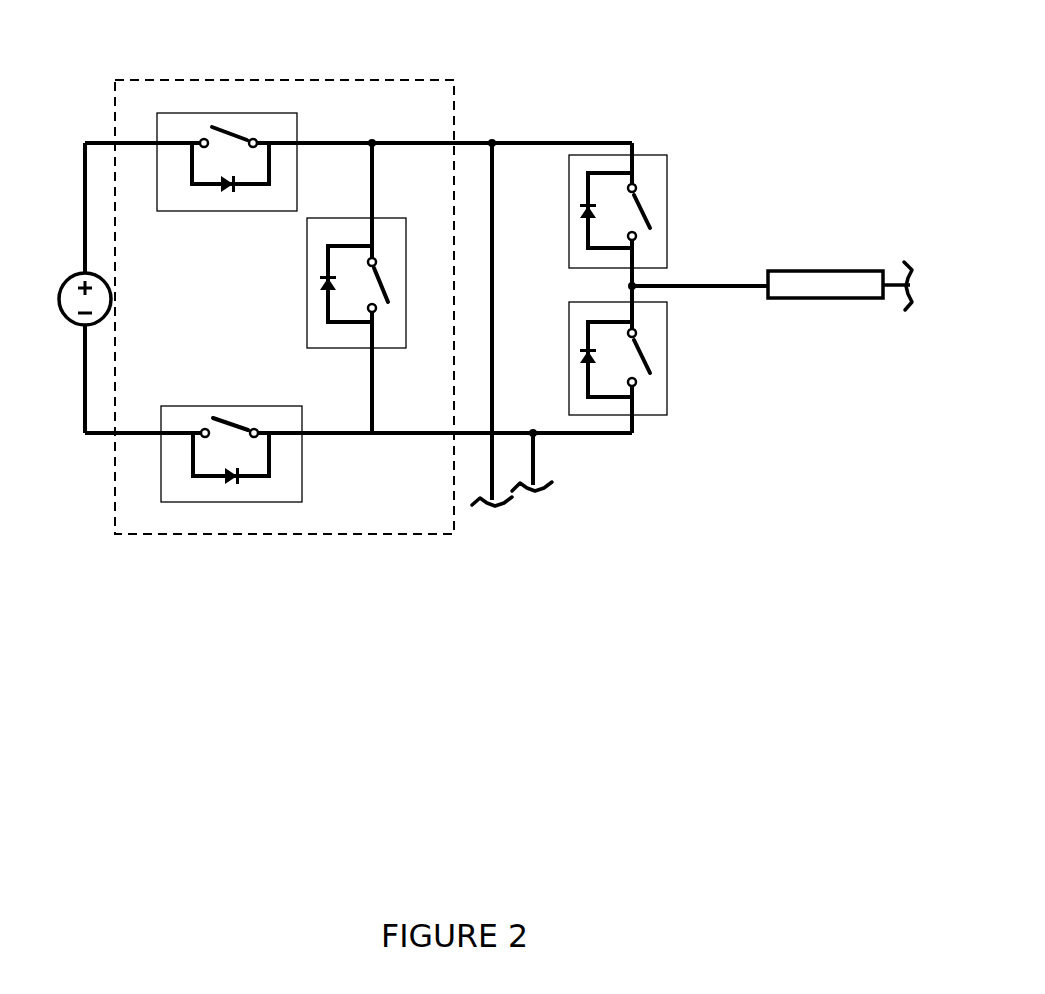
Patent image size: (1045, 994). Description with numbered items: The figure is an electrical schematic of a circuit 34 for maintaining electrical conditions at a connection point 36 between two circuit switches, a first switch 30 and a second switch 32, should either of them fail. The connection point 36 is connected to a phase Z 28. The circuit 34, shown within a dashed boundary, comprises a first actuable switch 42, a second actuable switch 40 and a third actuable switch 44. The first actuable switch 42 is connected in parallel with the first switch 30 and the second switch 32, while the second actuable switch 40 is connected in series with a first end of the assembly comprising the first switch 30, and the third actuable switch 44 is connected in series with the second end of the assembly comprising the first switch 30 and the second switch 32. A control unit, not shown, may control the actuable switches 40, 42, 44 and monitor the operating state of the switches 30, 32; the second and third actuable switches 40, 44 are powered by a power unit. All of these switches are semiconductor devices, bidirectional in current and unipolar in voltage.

The phase Z 28 is at (822, 270).
The first switch 30 is at (667, 210).
The second switch 32 is at (667, 358).
The circuit for maintaining electrical conditions 34 is at (454, 80).
The connection point 36 is at (673, 284).
The second actuable switch 40 is at (230, 113).
The first actuable switch 42 is at (307, 290).
The third actuable switch 44 is at (232, 406).